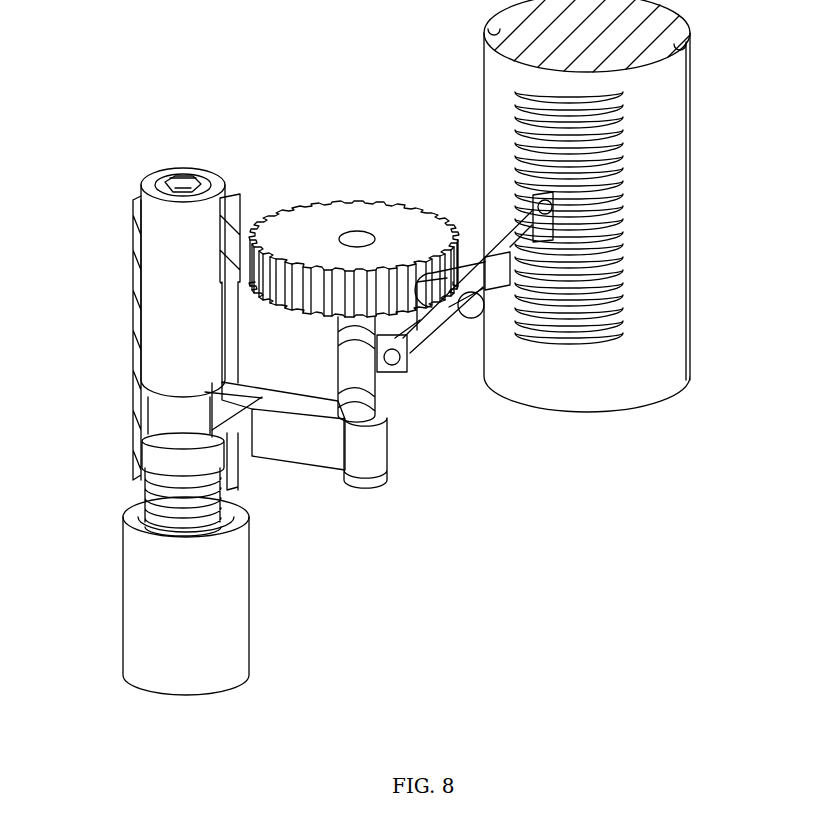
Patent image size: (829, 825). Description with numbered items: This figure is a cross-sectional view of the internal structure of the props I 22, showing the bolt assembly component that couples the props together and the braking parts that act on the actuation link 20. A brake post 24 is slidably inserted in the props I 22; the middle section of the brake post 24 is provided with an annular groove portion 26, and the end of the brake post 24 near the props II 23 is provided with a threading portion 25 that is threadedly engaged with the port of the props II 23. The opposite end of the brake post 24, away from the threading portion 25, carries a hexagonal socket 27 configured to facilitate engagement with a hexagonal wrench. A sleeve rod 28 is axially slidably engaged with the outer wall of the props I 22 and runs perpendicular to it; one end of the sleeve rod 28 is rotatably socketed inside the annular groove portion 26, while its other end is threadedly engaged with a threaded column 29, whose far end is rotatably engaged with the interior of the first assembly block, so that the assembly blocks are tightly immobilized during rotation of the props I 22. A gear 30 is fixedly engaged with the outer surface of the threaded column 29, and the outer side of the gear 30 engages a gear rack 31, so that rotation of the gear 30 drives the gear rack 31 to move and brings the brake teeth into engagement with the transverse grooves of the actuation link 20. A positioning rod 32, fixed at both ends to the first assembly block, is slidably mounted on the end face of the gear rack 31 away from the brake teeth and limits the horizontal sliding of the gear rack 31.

The actuation link 20 is at (660, 250).
The props I 22 is at (133, 243).
The props II 23 is at (228, 615).
The brake post 24 is at (165, 333).
The threading portion 25 is at (130, 506).
The annular groove portion 26 is at (150, 432).
The hexagonal socket 27 is at (183, 185).
The sleeve rod 28 is at (308, 453).
The threaded column 29 is at (378, 430).
The gear 30 is at (357, 220).
The gear rack 31 is at (492, 215).
The positioning rod 32 is at (427, 332).